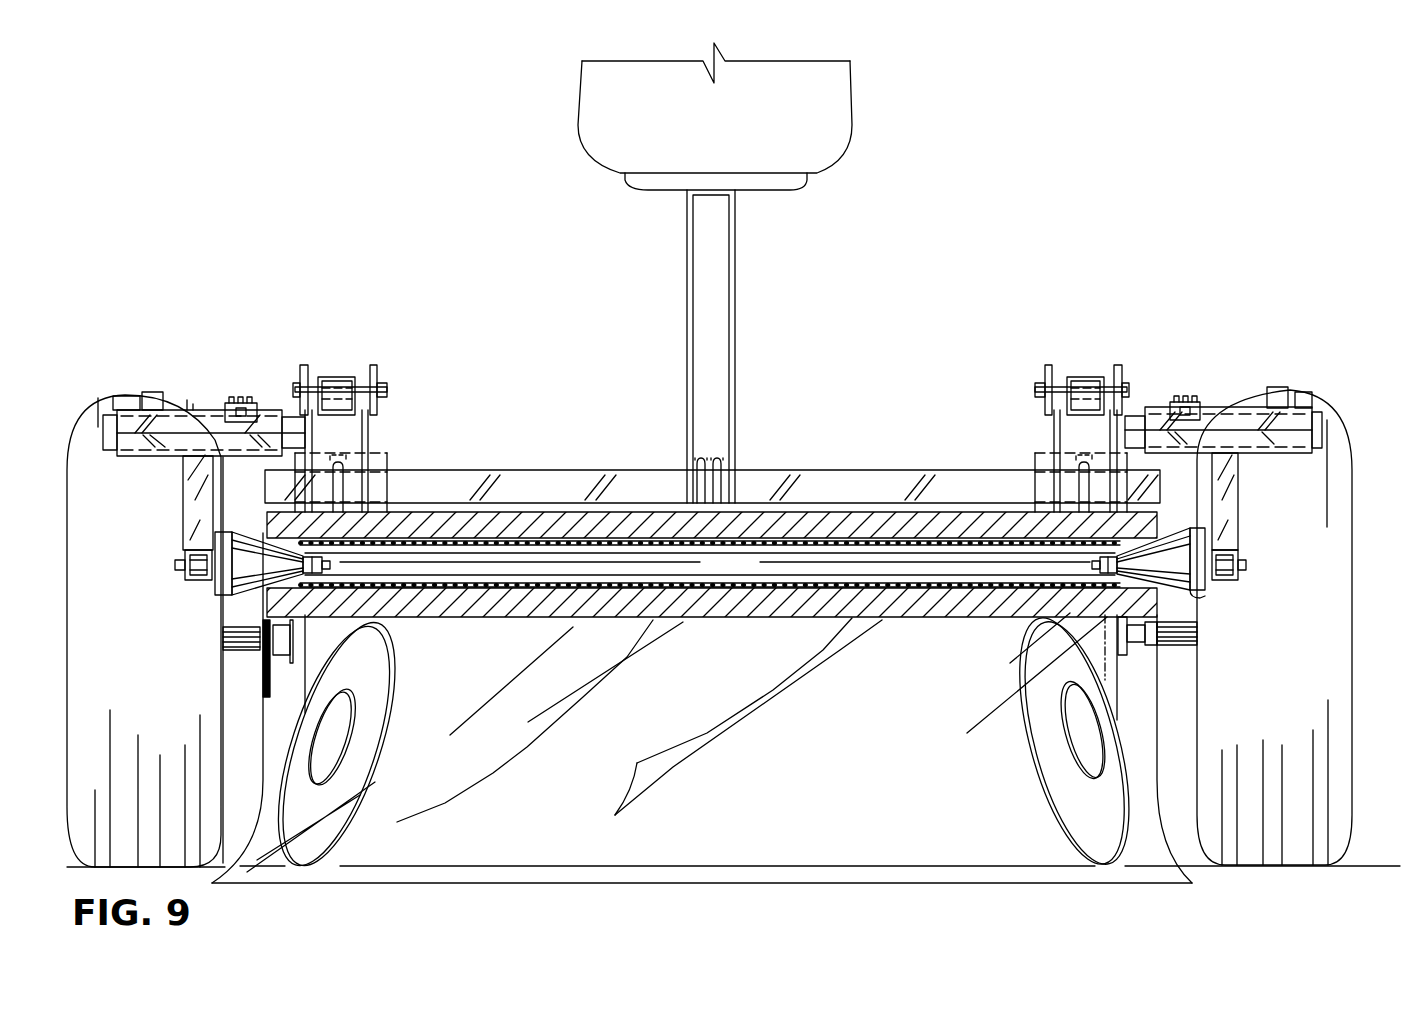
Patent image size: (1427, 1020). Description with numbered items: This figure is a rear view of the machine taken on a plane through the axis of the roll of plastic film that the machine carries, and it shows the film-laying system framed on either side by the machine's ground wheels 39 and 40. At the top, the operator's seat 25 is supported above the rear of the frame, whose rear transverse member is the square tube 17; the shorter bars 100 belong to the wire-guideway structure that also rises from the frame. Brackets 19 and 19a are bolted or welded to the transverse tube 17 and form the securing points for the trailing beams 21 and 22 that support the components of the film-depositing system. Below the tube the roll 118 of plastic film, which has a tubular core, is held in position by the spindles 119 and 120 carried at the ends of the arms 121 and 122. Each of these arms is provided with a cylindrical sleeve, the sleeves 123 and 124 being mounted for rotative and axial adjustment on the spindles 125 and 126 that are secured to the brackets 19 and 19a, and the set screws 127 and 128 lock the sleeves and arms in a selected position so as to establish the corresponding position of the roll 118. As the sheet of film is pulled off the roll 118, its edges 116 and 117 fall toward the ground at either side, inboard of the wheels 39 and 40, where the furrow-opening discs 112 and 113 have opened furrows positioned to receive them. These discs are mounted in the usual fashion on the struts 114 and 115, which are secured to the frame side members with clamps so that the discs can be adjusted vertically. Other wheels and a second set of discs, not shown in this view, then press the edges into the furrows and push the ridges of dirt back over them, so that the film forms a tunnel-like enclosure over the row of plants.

The operator's seat 25 is at (848, 107).
The shorter bars 100 is at (735, 255).
The square tube 17 is at (852, 470).
The roll 118 is at (728, 617).
The spindle 119 is at (215, 587).
The spindle 120 is at (1205, 590).
The bracket 19a is at (366, 423).
The bracket 19 is at (1058, 430).
The trailing beam 22 is at (340, 415).
The trailing beam 21 is at (1087, 410).
The cylindrical sleeve 123 is at (196, 411).
The cylindrical sleeve 124 is at (1269, 403).
The spindle 125 is at (110, 455).
The spindle 126 is at (1322, 437).
The set screw 127 is at (1186, 400).
The set screw 128 is at (243, 403).
The arm 121 is at (183, 515).
The arm 122 is at (1238, 513).
The left wheel 39 is at (133, 397).
The right wheel 40 is at (1338, 428).
The edge of sheet of plastic film 116 is at (263, 775).
The edge of sheet of plastic film 117 is at (1153, 765).
The strut 114 is at (317, 633).
The strut 115 is at (1117, 668).
The furrow-opening disc 112 is at (385, 693).
The furrow-opening disc 113 is at (1040, 733).